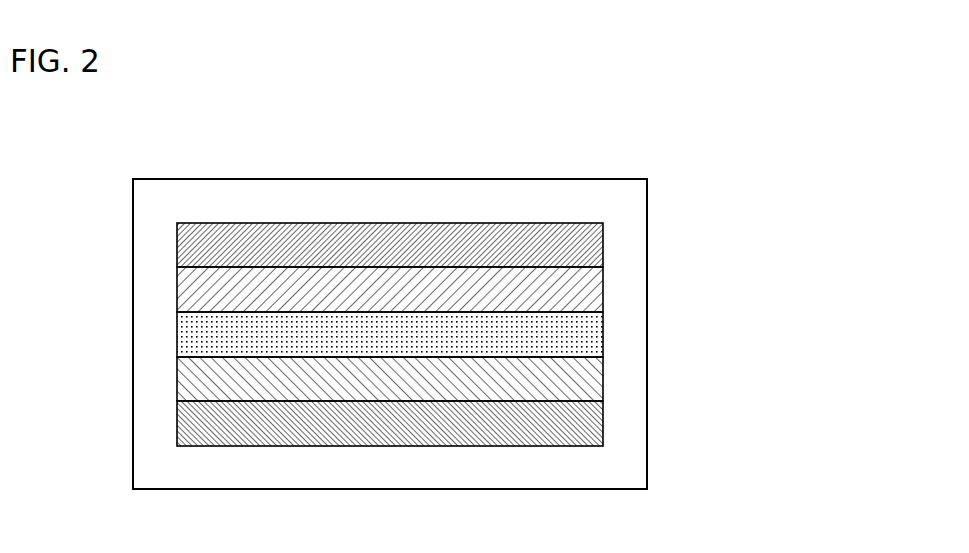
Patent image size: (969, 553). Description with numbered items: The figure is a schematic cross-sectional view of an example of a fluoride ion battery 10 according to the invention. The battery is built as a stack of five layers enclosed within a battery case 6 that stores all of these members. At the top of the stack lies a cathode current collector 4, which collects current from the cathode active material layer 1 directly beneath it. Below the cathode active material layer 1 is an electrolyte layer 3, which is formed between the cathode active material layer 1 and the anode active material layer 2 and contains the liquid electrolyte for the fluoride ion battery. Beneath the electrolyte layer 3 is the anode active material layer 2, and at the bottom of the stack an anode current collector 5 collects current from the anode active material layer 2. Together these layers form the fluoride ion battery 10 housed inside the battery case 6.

The fluoride ion battery 10 is at (626, 150).
The battery case 6 is at (617, 210).
The cathode current collector 4 is at (575, 253).
The cathode active material layer 1 is at (575, 298).
The electrolyte layer 3 is at (575, 343).
The anode active material layer 2 is at (575, 388).
The anode current collector 5 is at (575, 432).